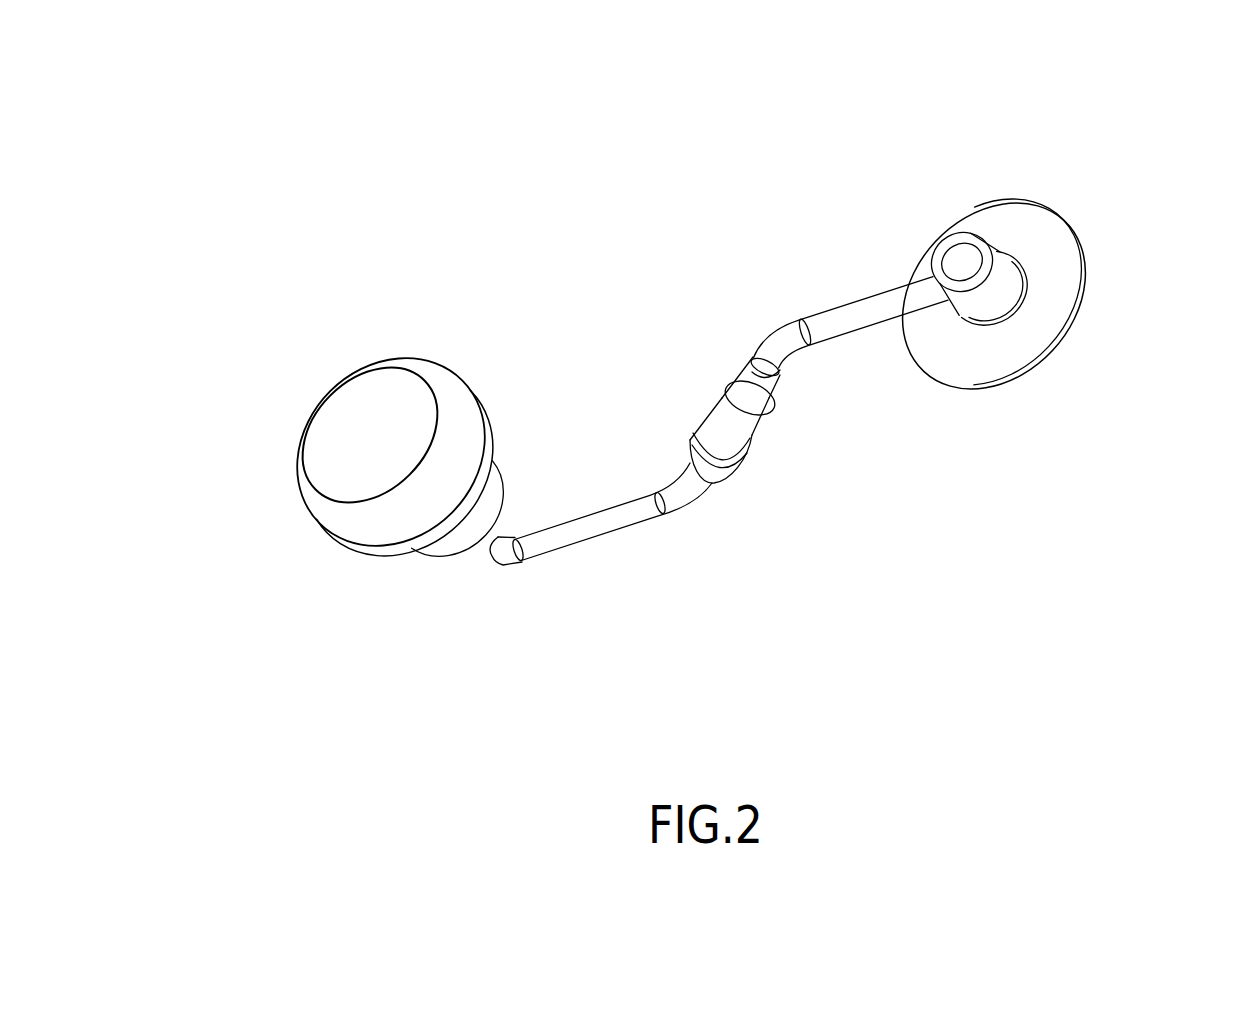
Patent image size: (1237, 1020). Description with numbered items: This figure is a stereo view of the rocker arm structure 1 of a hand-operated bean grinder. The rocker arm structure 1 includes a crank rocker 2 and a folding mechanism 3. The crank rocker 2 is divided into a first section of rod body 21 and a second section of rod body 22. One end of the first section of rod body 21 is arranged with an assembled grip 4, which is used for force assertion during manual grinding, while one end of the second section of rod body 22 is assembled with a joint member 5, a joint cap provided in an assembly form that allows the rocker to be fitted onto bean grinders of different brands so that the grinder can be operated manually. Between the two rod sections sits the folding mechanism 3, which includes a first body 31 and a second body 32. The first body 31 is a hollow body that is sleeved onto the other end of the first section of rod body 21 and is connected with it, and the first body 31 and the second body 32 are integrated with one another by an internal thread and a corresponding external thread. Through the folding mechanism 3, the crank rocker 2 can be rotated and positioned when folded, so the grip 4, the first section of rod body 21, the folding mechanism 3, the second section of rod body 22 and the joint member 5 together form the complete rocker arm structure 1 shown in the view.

The rocker arm structure 1 is at (278, 208).
The crank rocker 2 is at (775, 143).
The first section of rod body 21 is at (577, 518).
The second section of rod body 22 is at (860, 312).
The folding mechanism 3 is at (892, 508).
The first body 31 is at (706, 476).
The second body 32 is at (748, 433).
The grip 4 is at (370, 367).
The joint member 5 is at (1058, 237).